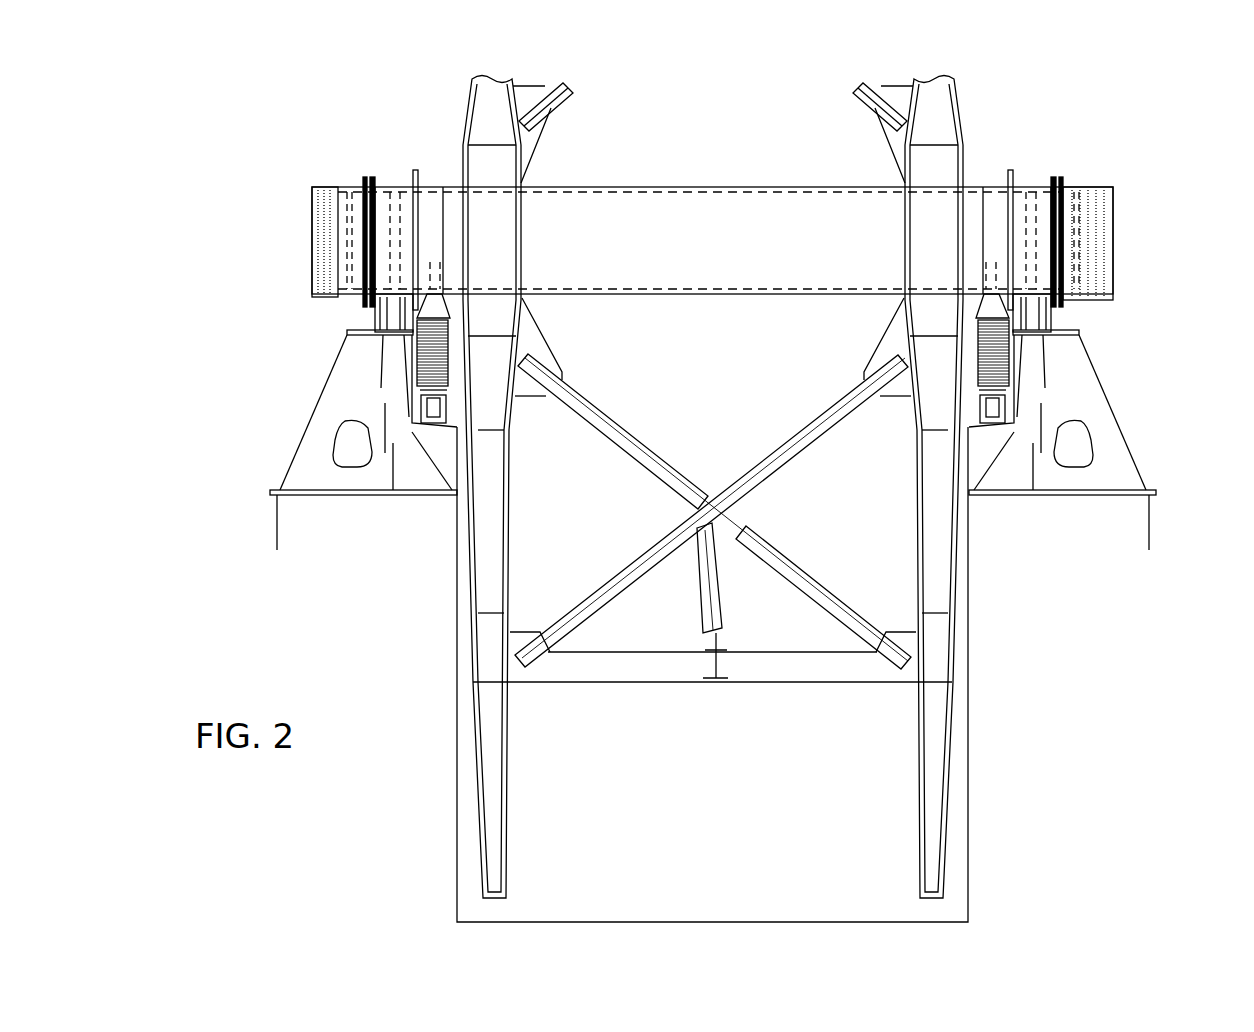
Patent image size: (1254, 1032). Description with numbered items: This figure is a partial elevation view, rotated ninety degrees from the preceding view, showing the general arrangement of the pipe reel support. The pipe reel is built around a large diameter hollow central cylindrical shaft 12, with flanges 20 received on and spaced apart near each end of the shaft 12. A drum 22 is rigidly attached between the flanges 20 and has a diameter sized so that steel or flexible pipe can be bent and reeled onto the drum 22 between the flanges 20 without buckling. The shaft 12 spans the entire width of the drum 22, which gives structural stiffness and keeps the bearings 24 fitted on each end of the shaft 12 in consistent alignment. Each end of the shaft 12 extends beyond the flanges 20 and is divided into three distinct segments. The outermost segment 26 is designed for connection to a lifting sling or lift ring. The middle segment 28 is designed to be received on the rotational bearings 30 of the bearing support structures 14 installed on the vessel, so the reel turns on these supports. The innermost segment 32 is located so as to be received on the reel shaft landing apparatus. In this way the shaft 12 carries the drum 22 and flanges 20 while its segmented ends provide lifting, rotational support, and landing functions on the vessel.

The central cylindrical shaft 12 is at (663, 297).
The bearing support structure 14 is at (290, 392).
The flange 20 is at (507, 888).
The drum 22 is at (818, 683).
The bearing 24 is at (405, 150).
The outermost segment 26 is at (338, 185).
The middle segment 28 is at (397, 185).
The rotational bearing 30 is at (373, 320).
The innermost segment 32 is at (434, 183).